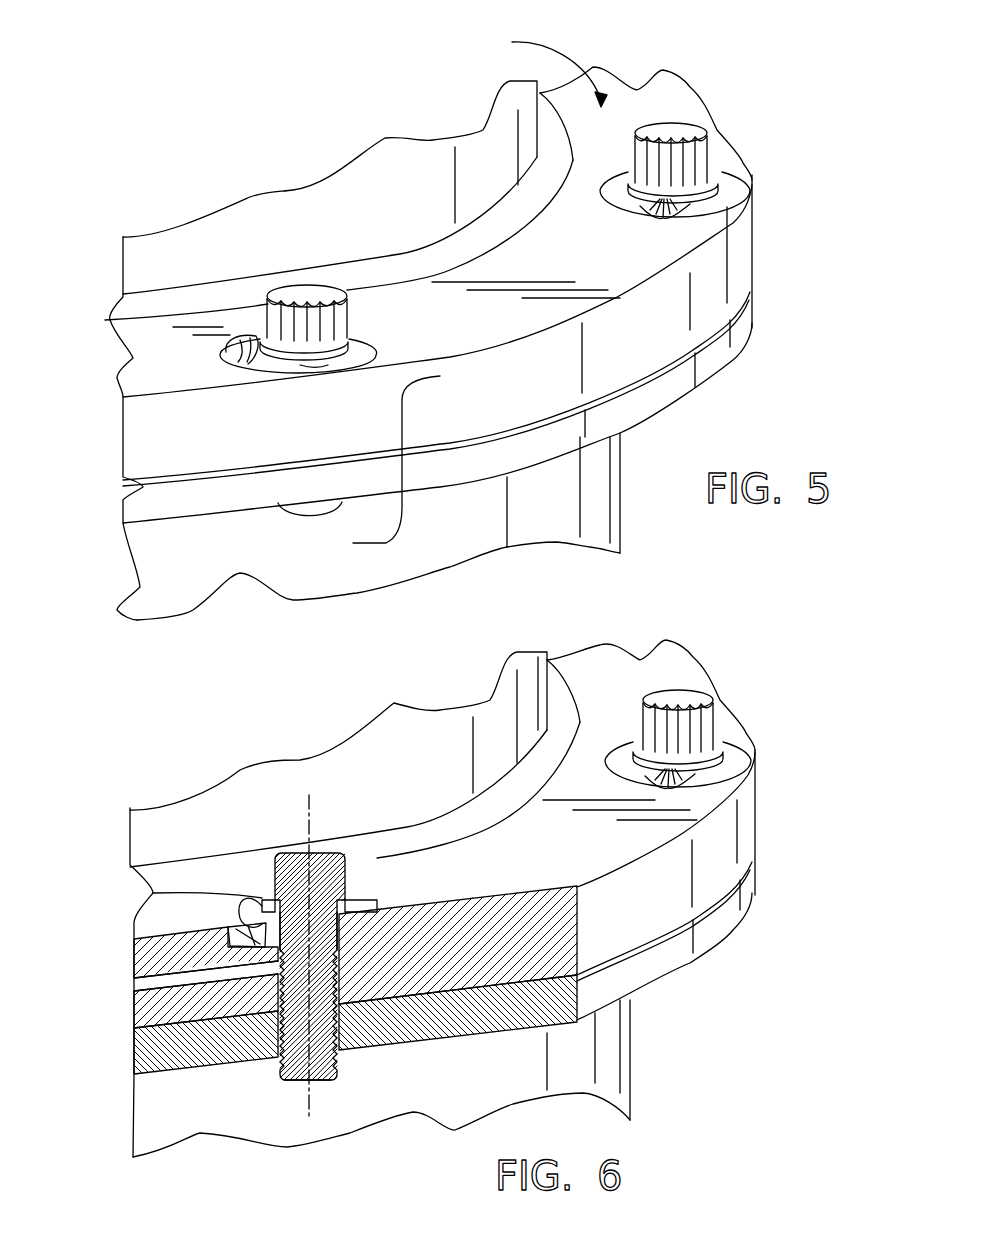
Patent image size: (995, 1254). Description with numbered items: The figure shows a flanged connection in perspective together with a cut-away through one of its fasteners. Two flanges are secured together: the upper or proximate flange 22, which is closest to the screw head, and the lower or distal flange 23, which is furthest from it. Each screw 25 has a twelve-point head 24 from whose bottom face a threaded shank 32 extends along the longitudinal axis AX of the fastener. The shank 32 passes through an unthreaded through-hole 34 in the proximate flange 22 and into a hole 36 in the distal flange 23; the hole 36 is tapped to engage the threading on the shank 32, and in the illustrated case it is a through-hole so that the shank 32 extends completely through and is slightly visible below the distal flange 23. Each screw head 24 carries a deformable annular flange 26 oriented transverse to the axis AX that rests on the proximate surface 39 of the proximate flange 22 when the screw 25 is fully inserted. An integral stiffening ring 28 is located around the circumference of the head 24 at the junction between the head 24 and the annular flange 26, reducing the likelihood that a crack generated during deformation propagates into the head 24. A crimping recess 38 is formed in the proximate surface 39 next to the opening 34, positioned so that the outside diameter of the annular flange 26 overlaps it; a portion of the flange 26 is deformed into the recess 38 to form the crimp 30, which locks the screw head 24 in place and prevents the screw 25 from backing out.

In FIG. 5, the proximate flange 22 is at (740, 243).
In FIG. 6, the proximate flange 22 is at (730, 852).
In FIG. 5, the distal flange 23 is at (745, 320).
In FIG. 6, the distal flange 23 is at (712, 930).
In FIG. 5, the screw head 24 is at (268, 312).
In FIG. 6, the screw head 24 is at (243, 895).
In FIG. 5, the screw 25 is at (440, 376).
In FIG. 5, the annular flange 26 is at (320, 363).
In FIG. 6, the annular flange 26 is at (377, 918).
In FIG. 5, the stiffening ring 28 is at (344, 340).
In FIG. 6, the stiffening ring 28 is at (683, 760).
In FIG. 5, the crimp 30 is at (238, 352).
In FIG. 6, the crimp 30 is at (268, 858).
In FIG. 5, the threaded shank 32 is at (308, 522).
In FIG. 6, the threaded shank 32 is at (278, 1060).
In FIG. 6, the through-hole 34 is at (143, 984).
In FIG. 6, the hole 36 is at (140, 1046).
In FIG. 6, the crimping recess 38 is at (152, 952).
In FIG. 5, the proximate surface 39 is at (540, 68).
In FIG. 6, the longitudinal axis AX is at (306, 814).